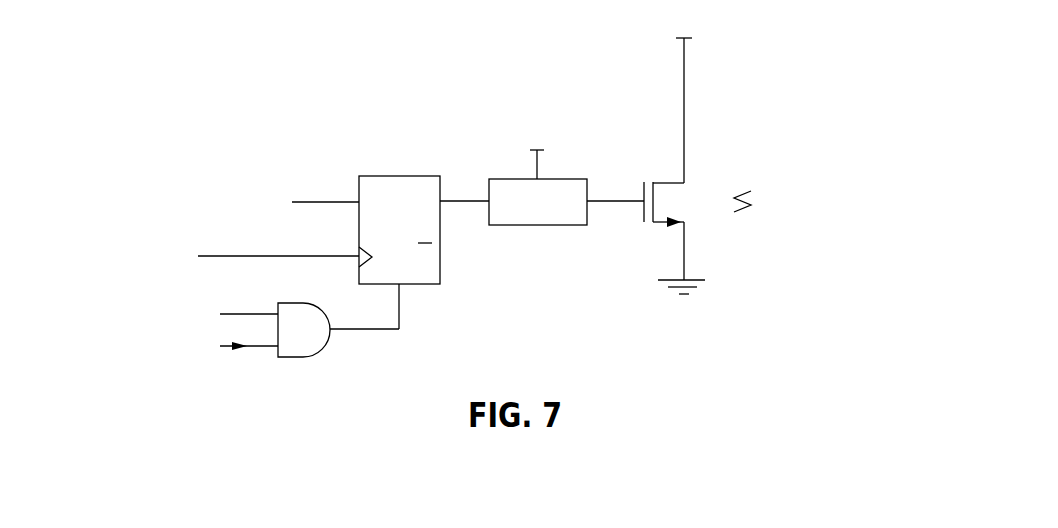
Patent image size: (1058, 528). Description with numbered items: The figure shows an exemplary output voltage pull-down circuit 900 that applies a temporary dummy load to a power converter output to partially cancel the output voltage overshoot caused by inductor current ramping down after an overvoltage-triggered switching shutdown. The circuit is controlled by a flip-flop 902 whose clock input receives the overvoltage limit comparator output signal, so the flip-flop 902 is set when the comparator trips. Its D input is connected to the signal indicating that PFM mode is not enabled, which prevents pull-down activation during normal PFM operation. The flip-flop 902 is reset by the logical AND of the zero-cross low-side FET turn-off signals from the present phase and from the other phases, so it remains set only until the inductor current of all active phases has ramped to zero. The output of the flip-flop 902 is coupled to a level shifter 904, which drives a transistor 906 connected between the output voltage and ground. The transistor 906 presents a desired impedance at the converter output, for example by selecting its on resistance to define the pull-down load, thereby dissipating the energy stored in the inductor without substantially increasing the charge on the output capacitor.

The output voltage pull-down circuit 900 is at (330, 97).
The flip-flop 902 is at (398, 172).
The level shifter 904 is at (564, 232).
The transistor 906 is at (651, 240).